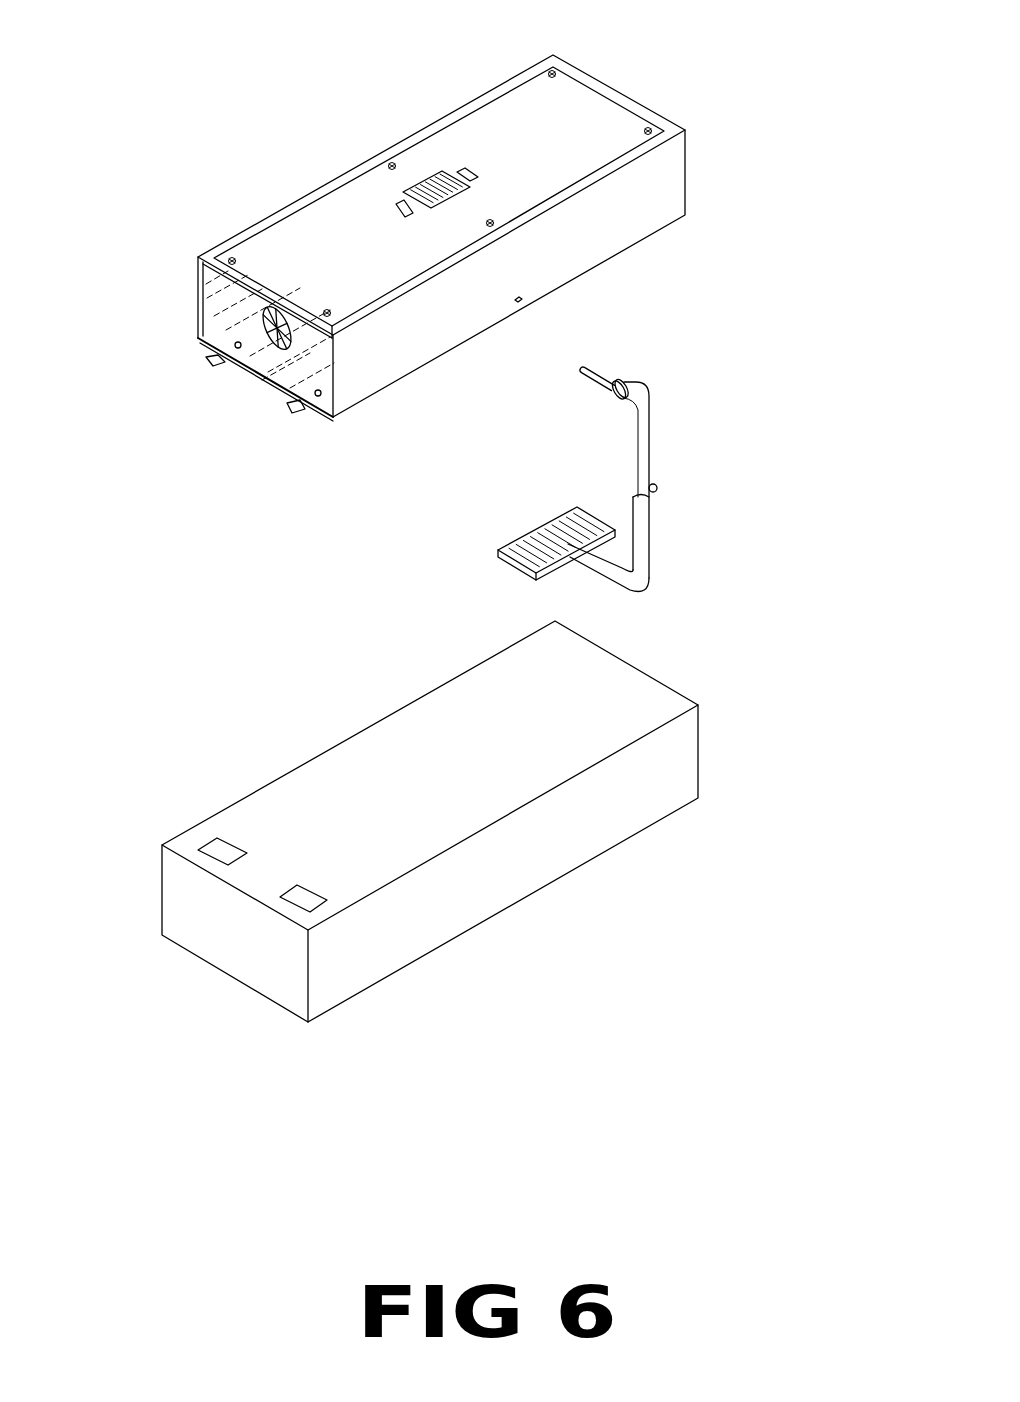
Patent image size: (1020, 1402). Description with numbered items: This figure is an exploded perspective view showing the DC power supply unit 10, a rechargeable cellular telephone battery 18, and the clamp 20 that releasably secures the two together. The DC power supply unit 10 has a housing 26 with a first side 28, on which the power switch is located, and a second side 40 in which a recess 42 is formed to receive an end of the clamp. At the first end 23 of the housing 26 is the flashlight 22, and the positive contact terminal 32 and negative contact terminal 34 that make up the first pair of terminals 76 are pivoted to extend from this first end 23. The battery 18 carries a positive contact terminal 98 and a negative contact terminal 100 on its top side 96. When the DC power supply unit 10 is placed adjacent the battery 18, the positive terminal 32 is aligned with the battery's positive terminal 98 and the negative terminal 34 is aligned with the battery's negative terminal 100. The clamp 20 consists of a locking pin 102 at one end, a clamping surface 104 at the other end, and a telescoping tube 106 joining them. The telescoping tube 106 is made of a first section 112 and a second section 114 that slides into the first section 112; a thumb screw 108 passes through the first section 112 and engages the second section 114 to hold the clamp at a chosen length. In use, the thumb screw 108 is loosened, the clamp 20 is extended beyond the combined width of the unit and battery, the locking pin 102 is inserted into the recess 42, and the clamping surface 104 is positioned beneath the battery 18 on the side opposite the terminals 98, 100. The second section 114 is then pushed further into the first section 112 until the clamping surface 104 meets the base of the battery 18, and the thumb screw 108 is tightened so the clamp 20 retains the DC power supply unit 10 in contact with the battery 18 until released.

The DC power supply unit 10 is at (252, 225).
The battery 18 is at (430, 938).
The clamp 20 is at (638, 458).
The flashlight 22 is at (253, 396).
The first end 23 is at (200, 275).
The housing 26 is at (353, 120).
The first side 28 is at (557, 140).
The positive contact terminal 32 is at (212, 363).
The negative contact terminal 34 is at (292, 411).
The second side 40 is at (640, 222).
The recess 42 is at (520, 303).
The first pair of terminals 76 is at (290, 408).
The top side 96 is at (534, 747).
The positive contact terminal 98 is at (223, 852).
The negative contact terminal 100 is at (310, 905).
The locking pin 102 is at (600, 368).
The clamping surface 104 is at (513, 546).
The telescoping tube 106 is at (650, 443).
The thumb screw 108 is at (657, 492).
The first section 112 is at (628, 388).
The second section 114 is at (603, 570).